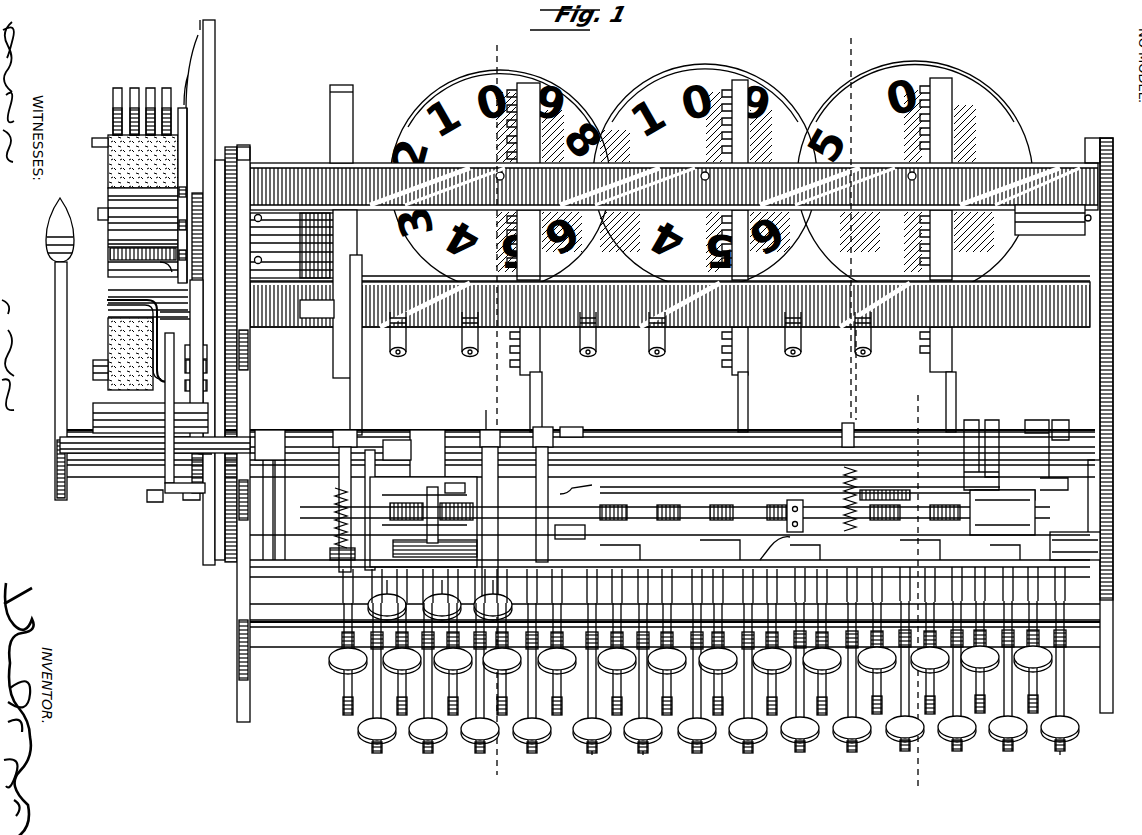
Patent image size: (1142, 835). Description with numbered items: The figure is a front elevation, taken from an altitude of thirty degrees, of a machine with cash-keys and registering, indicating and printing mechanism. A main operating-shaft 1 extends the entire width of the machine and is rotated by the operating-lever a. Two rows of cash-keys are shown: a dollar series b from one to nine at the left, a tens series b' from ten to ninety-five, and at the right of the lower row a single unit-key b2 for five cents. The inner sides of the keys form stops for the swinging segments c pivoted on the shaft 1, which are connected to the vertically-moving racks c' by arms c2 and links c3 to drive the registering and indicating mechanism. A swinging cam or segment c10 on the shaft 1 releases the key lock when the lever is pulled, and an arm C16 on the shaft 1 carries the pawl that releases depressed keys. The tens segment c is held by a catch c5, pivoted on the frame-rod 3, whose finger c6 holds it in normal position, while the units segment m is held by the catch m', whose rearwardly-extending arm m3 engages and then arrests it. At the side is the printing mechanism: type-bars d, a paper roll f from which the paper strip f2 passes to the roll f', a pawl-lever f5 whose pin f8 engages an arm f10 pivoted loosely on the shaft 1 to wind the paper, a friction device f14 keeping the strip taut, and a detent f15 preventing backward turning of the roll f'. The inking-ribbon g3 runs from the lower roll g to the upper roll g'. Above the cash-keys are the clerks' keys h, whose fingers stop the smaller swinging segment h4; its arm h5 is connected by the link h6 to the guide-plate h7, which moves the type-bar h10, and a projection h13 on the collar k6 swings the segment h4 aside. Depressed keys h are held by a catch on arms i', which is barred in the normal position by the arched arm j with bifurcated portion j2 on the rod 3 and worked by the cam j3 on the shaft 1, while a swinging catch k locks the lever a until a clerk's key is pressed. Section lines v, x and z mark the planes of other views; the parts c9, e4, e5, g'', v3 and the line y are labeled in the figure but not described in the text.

The main operating-shaft 1 is at (660, 438).
The frame-rod 3 is at (624, 542).
The operating-lever a is at (54, 328).
The dollar series of cash-keys b is at (704, 678).
The tens series of cash-keys b' is at (664, 770).
The unit-key b2 is at (1080, 731).
The swinging segments c is at (755, 494).
The vertically-moving racks c' is at (725, 226).
The arms c2 is at (542, 395).
The links c3 is at (762, 269).
The catch c5 is at (680, 536).
The finger c6 is at (797, 500).
The bracket c9 is at (1102, 547).
The swinging cam or segment c10 is at (1102, 494).
The type-bars d is at (172, 76).
The pawl e4 is at (206, 355).
The lever e5 is at (202, 404).
The paper roll f is at (133, 293).
The paper roll f' is at (126, 194).
The paper strip f2 is at (108, 248).
The pawl-lever f5 is at (200, 315).
The laterally-projecting pin f8 is at (94, 415).
The upwardly-projecting arm f10 is at (170, 503).
The friction device f14 is at (116, 318).
The detent f15 is at (156, 266).
The lower ribbon roll g is at (94, 382).
The upper ribbon roll g' is at (125, 144).
The inking-ribbon g3 is at (108, 175).
The wires g'' is at (185, 65).
The special or clerks' keys h is at (368, 602).
The swinging segment h4 is at (490, 438).
The rearwardly-extending arm h5 is at (358, 400).
The link h6 is at (368, 276).
The vertically-sliding guide-plate h7 is at (354, 96).
The type-bar h10 is at (168, 100).
The projection h13 is at (334, 490).
The arms i' is at (483, 406).
The rearwardly-extending arm j is at (423, 520).
The bifurcated portion j2 is at (334, 538).
The cam j3 is at (443, 434).
The swinging catch k is at (334, 514).
The collar k6 is at (392, 438).
The swinging segment m is at (990, 455).
The catch m' is at (908, 512).
The rearwardly-extending arm m3 is at (856, 484).
The section line v is at (853, 375).
The block v3 is at (455, 480).
The section line x is at (499, 405).
The section line y is at (849, 227).
The section line z is at (912, 585).
The arm C16 is at (265, 500).